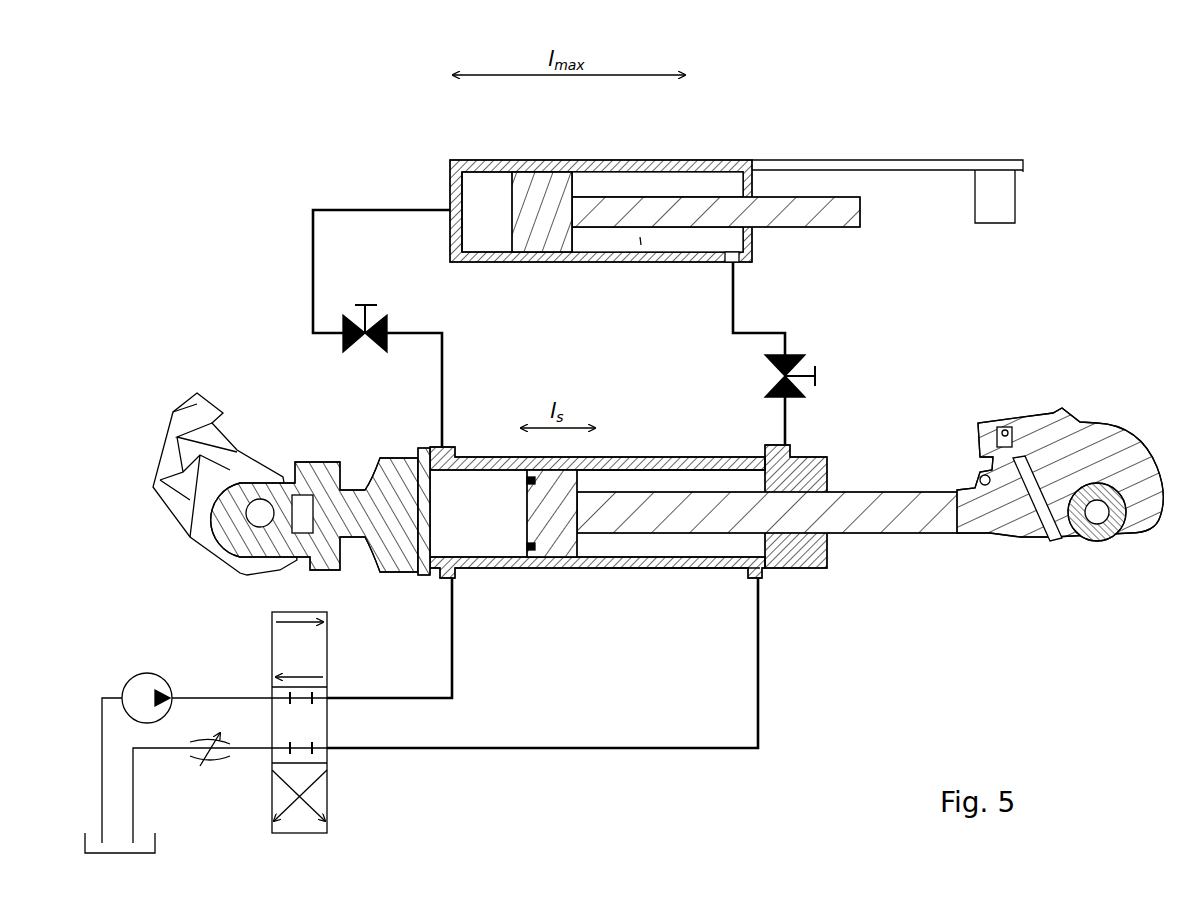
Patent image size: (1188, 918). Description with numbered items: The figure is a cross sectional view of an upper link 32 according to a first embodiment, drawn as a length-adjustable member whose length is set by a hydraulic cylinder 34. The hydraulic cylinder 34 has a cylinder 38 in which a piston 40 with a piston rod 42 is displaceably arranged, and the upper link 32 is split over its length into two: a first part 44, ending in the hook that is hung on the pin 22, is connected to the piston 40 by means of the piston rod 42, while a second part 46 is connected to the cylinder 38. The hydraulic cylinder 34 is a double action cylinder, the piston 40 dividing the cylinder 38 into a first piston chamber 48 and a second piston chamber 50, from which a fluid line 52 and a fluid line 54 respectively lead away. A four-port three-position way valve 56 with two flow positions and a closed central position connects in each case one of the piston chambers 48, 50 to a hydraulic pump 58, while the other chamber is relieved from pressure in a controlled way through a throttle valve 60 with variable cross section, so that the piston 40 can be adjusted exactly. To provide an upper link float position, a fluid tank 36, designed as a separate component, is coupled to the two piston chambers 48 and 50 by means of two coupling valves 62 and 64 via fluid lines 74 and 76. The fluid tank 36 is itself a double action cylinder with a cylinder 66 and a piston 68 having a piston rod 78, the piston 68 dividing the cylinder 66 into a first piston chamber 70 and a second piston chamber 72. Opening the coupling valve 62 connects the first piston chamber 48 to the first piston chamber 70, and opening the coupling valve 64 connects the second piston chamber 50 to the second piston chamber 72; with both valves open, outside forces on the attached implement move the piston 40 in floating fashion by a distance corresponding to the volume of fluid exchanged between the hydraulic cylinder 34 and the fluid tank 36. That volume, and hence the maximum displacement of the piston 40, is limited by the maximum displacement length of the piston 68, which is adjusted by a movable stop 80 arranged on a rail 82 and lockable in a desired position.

The pin 22 is at (1090, 542).
The upper link 32 is at (880, 598).
The hydraulic cylinder 34 is at (645, 456).
The fluid tank 36 is at (638, 160).
The cylinder 38 is at (690, 577).
The piston 40 is at (558, 532).
The piston rod 42 is at (727, 508).
The first part 44 is at (990, 516).
The second part 46 is at (386, 456).
The first piston chamber 48 is at (490, 478).
The second piston chamber 50 is at (692, 478).
The fluid line 52 is at (455, 623).
The fluid line 54 is at (762, 671).
The 4/3 way valve 56 is at (330, 792).
The hydraulic pump 58 is at (146, 672).
The throttle valve 60 is at (213, 762).
The coupling valve 62 is at (353, 352).
The coupling valve 64 is at (797, 351).
The cylinder 66 is at (690, 163).
The piston 68 is at (537, 186).
The first piston chamber 70 is at (458, 240).
The second piston chamber 72 is at (670, 240).
The fluid line 74 is at (445, 372).
The fluid line 76 is at (790, 418).
The piston rod 78 is at (788, 215).
The movable stop 80 is at (1008, 203).
The rail 82 is at (912, 160).